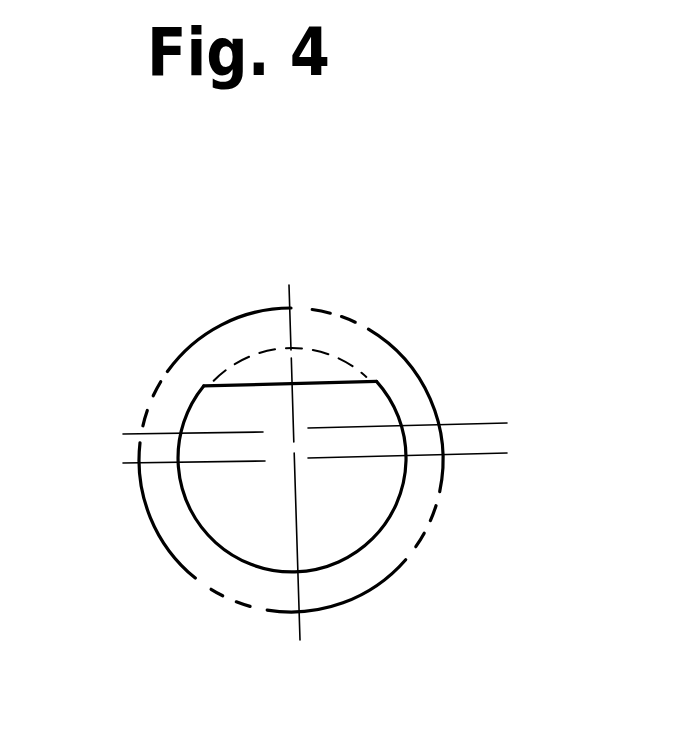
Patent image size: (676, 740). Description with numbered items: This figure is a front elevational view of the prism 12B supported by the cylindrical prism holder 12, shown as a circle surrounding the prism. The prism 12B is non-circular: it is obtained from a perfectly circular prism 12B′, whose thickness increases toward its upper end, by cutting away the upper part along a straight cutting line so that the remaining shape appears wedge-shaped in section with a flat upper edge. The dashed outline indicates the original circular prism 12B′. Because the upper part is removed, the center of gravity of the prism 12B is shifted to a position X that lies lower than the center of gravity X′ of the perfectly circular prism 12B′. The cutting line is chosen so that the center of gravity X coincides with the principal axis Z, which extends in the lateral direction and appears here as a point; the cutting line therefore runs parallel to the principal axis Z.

The cylindrical prism holder 12 is at (182, 537).
The prism 12B is at (242, 533).
The circular prism 12B′ is at (335, 377).
The center of gravity X is at (292, 457).
The center of gravity of the circular prism X′ is at (292, 427).
The principal axis Z is at (490, 452).